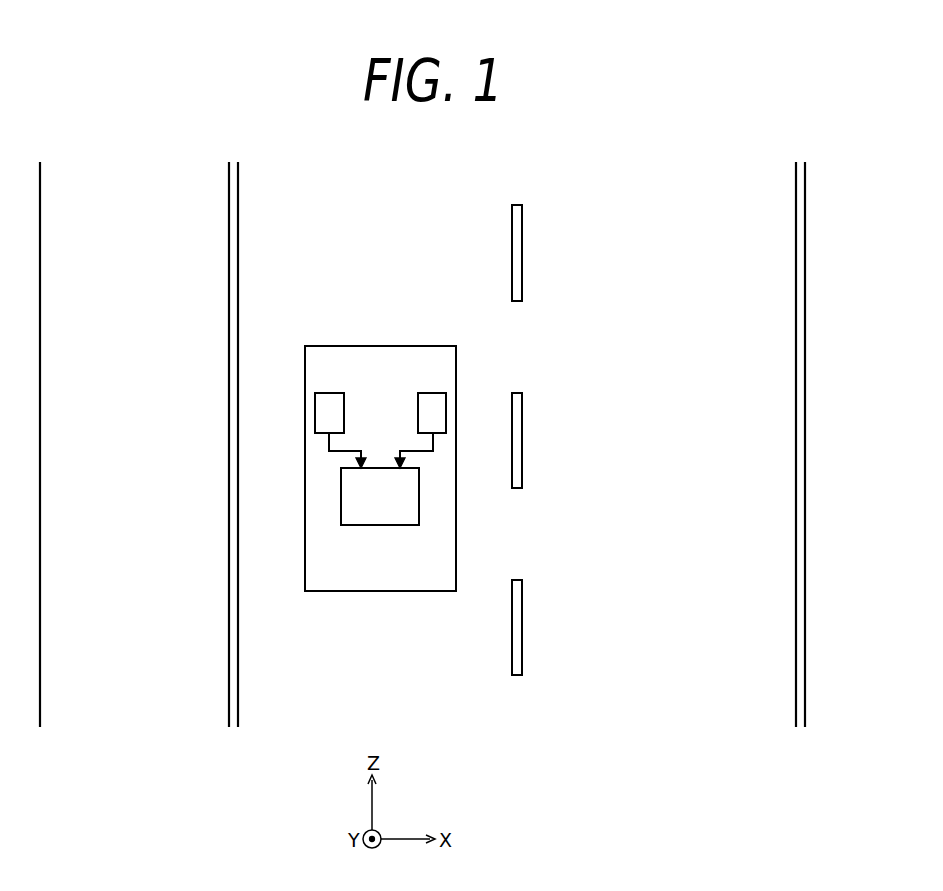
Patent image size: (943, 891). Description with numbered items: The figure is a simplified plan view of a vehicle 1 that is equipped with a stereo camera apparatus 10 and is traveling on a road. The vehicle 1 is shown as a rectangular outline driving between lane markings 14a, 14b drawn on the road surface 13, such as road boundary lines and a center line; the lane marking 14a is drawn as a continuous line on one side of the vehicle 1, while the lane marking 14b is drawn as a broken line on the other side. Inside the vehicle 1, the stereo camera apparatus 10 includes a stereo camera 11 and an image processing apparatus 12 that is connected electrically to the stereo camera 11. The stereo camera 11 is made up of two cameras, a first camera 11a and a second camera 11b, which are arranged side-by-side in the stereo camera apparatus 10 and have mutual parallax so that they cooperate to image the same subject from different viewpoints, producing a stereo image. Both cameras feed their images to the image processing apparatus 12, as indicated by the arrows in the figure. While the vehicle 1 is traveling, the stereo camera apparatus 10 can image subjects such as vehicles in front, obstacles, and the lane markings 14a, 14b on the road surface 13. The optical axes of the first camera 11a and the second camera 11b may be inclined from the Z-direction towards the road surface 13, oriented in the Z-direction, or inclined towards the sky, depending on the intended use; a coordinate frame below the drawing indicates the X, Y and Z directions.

The vehicle 1 is at (456, 536).
The stereo camera apparatus 10 is at (441, 370).
The stereo camera 11 is at (426, 310).
The first camera 11a is at (330, 392).
The second camera 11b is at (425, 392).
The image processing apparatus 12 is at (380, 526).
The road surface 13 is at (386, 231).
The lane marking 14a is at (232, 225).
The lane marking 14b is at (518, 242).